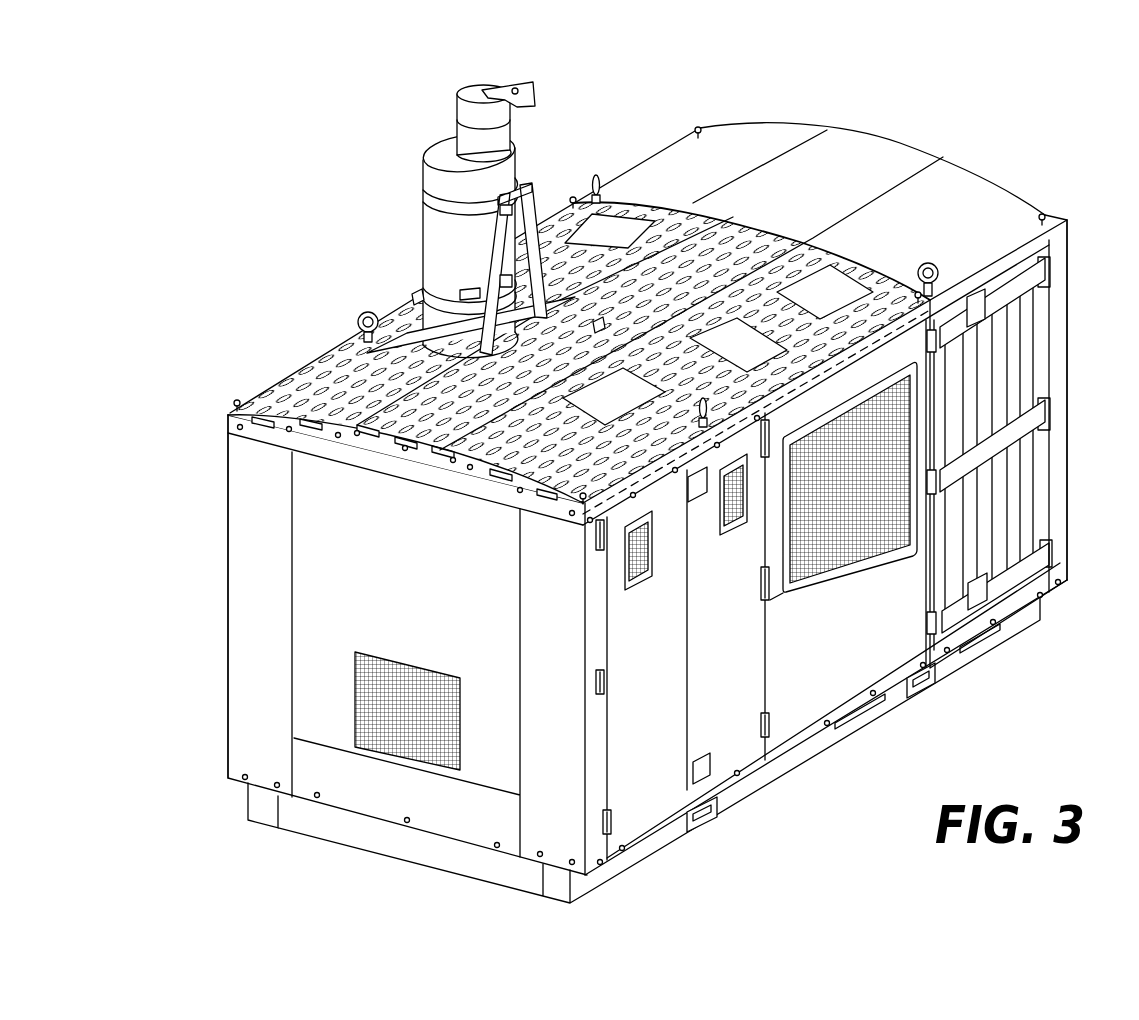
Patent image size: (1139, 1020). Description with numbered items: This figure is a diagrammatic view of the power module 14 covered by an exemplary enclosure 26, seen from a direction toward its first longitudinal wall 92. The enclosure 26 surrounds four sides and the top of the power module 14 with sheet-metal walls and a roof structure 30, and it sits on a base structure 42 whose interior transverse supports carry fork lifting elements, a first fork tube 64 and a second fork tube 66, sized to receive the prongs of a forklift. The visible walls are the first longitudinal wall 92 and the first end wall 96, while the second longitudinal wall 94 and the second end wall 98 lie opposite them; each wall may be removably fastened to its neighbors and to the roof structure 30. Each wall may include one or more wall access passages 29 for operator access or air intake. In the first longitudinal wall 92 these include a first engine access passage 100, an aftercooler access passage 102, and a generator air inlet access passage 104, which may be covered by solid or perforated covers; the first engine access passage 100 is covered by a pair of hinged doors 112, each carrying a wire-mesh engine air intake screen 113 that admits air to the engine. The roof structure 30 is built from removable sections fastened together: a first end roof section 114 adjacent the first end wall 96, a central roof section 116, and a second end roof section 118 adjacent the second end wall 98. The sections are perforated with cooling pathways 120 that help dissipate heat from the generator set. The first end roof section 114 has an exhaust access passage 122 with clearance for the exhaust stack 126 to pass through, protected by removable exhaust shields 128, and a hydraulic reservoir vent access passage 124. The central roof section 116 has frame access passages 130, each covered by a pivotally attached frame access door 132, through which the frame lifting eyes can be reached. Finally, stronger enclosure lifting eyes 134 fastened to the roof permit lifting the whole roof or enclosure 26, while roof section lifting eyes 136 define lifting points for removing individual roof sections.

The power module 14 is at (1023, 136).
The enclosure 26 is at (1057, 379).
The wall access passage 29 is at (356, 705).
The roof structure 30 is at (310, 367).
The base structure 42 is at (376, 846).
The first fork tube 64 is at (712, 824).
The second fork tube 66 is at (936, 694).
The first longitudinal wall 92 is at (820, 695).
The second longitudinal wall 94 is at (165, 534).
The first end wall 96 is at (386, 570).
The second end wall 98 is at (1085, 326).
The first engine access passage 100 is at (766, 782).
The aftercooler access passage 102 is at (872, 582).
The generator air inlet access passage 104 is at (1046, 470).
The hinged doors 112 is at (630, 724).
The engine air intake screen 113 is at (632, 578).
The first end roof section 114 is at (256, 223).
The central roof section 116 is at (551, 192).
The second end roof section 118 is at (665, 117).
The cooling pathways 120 is at (292, 387).
The exhaust access passage 122 is at (416, 297).
The hydraulic reservoir vent access passage 124 is at (490, 399).
The exhaust stack 126 is at (420, 166).
The removable exhaust shield 128 is at (366, 296).
The frame access passage 130 is at (782, 238).
The frame access door 132 is at (585, 242).
The enclosure lifting eye 134 is at (594, 178).
The roof section lifting eye 136 is at (572, 197).